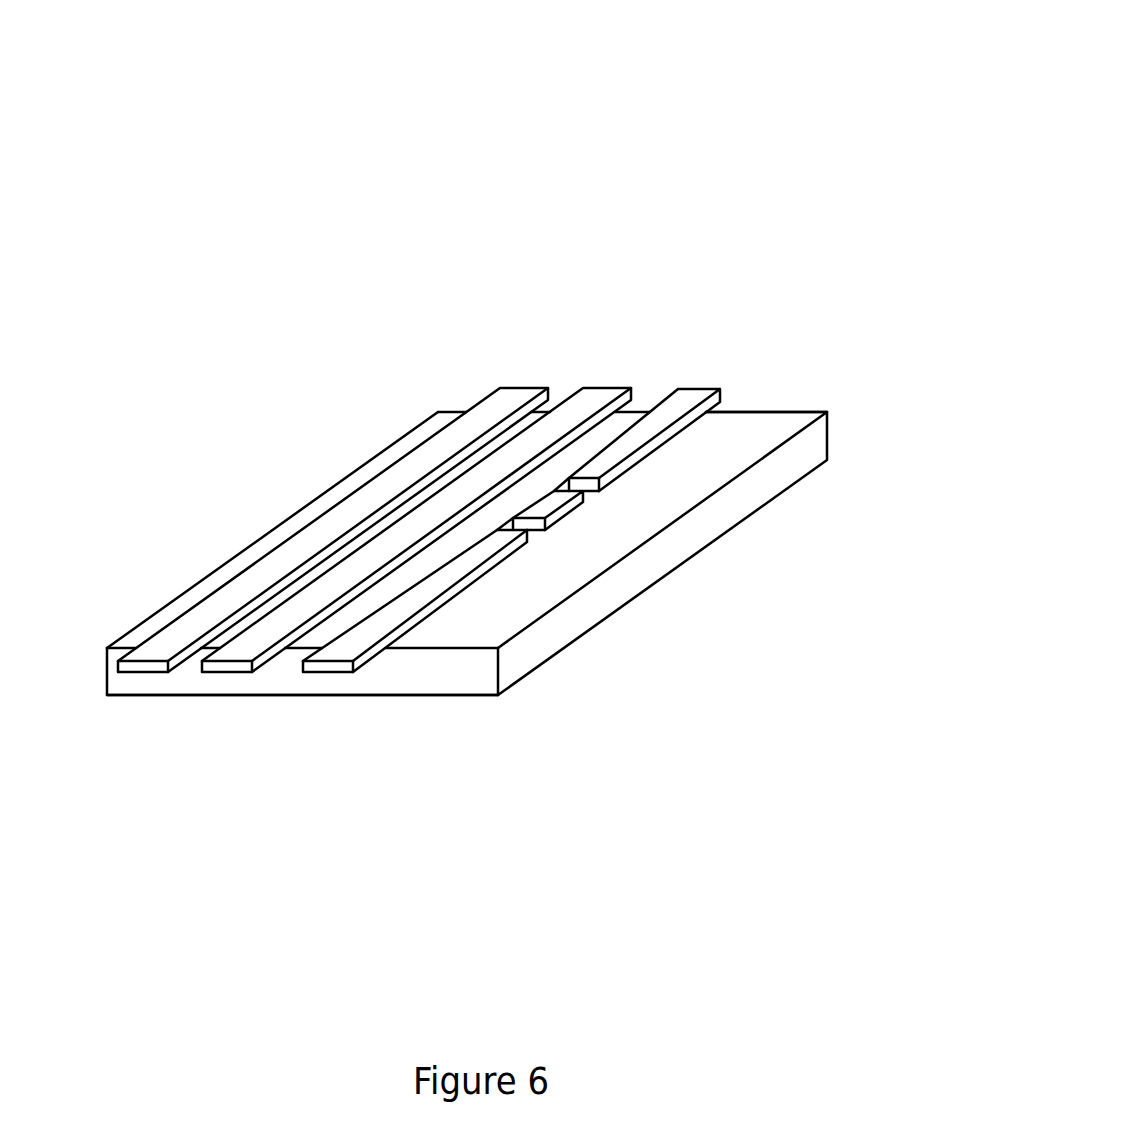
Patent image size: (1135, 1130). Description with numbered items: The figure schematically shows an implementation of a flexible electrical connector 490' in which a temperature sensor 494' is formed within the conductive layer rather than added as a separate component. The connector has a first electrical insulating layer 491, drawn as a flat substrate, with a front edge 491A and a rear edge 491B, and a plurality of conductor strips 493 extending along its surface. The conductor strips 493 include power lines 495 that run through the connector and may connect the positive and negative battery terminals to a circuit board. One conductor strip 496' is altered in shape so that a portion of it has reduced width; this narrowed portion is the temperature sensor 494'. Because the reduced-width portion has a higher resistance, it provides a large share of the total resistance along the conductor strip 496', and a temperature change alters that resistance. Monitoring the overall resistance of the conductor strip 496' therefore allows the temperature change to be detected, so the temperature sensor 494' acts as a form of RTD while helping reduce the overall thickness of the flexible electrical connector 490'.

The flexible electrical connector 490' is at (499, 470).
The first electrical insulating layer 491 is at (532, 659).
The front edge of substrate 491A is at (394, 716).
The back edge of substrate 491B is at (799, 395).
The conductor strips 493 is at (343, 481).
The waveguide end 495 is at (520, 387).
The temperature sensor 494' is at (688, 560).
The conductor strip 496' is at (729, 364).